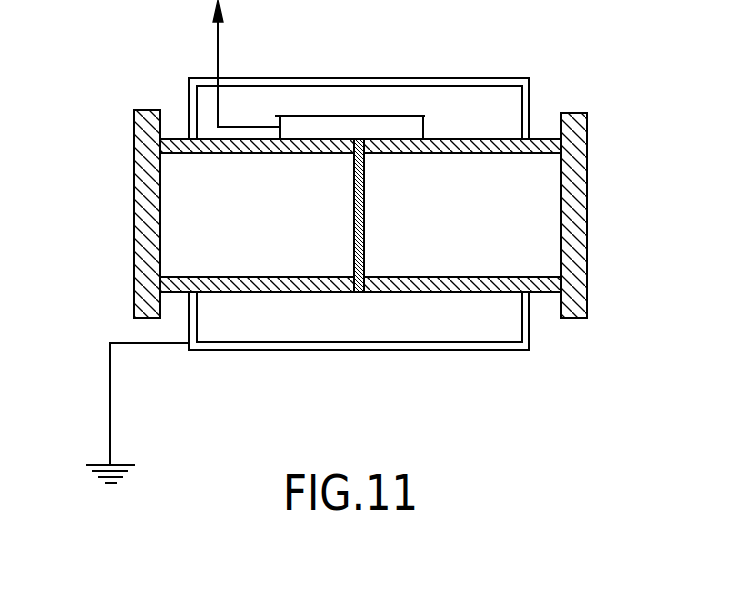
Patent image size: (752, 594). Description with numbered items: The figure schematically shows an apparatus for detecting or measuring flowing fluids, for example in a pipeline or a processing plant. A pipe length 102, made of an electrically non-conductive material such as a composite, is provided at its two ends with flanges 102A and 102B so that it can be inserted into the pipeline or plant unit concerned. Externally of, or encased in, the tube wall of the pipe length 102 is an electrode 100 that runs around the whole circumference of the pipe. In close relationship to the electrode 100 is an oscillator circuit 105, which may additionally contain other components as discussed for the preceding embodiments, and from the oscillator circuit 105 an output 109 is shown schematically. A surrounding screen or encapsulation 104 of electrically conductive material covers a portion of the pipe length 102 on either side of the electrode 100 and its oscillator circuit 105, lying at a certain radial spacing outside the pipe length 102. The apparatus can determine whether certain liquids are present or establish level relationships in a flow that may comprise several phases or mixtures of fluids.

The electrode 100 is at (364, 228).
The pipe length 102 is at (513, 153).
The flange 102A is at (587, 257).
The flange 102B is at (134, 233).
The screen or encapsulation 104 is at (530, 322).
The oscillator circuit 105 is at (425, 128).
The output 109 is at (218, 50).